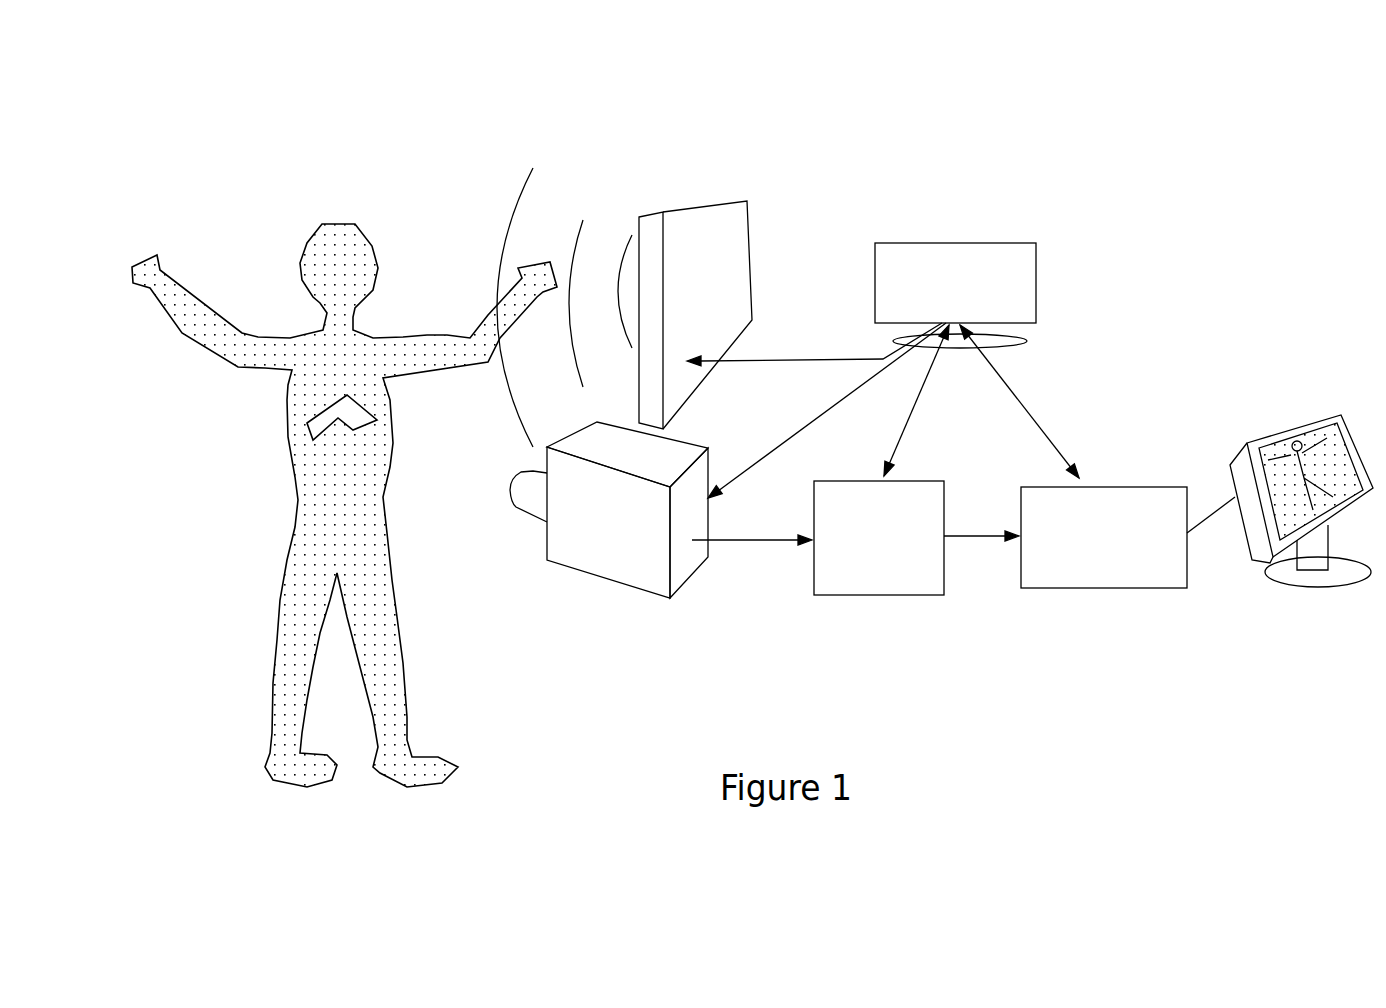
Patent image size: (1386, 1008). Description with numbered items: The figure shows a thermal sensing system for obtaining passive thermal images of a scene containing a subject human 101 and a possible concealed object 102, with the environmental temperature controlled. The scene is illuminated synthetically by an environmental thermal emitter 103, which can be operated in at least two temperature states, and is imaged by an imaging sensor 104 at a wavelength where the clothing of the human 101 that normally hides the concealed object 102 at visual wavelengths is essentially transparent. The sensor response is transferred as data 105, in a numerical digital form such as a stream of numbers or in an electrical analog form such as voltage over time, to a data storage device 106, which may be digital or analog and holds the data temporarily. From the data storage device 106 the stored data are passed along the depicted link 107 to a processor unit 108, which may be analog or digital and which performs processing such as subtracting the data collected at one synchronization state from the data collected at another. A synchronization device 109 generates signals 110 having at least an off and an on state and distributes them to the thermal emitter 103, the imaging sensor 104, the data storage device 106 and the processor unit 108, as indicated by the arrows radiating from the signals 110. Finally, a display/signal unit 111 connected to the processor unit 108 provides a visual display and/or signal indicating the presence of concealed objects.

The subject human 101 is at (310, 227).
The concealed object 102 is at (297, 423).
The thermal emitter 103 is at (747, 203).
The imaging sensor 104 is at (597, 578).
The data 105 is at (763, 550).
The data storage device 106 is at (878, 595).
The processed data 107 is at (990, 548).
The processor unit 108 is at (1138, 583).
The synchronization device 109 is at (1036, 282).
The signals 110 is at (1013, 342).
The display/signal unit 111 is at (1242, 447).